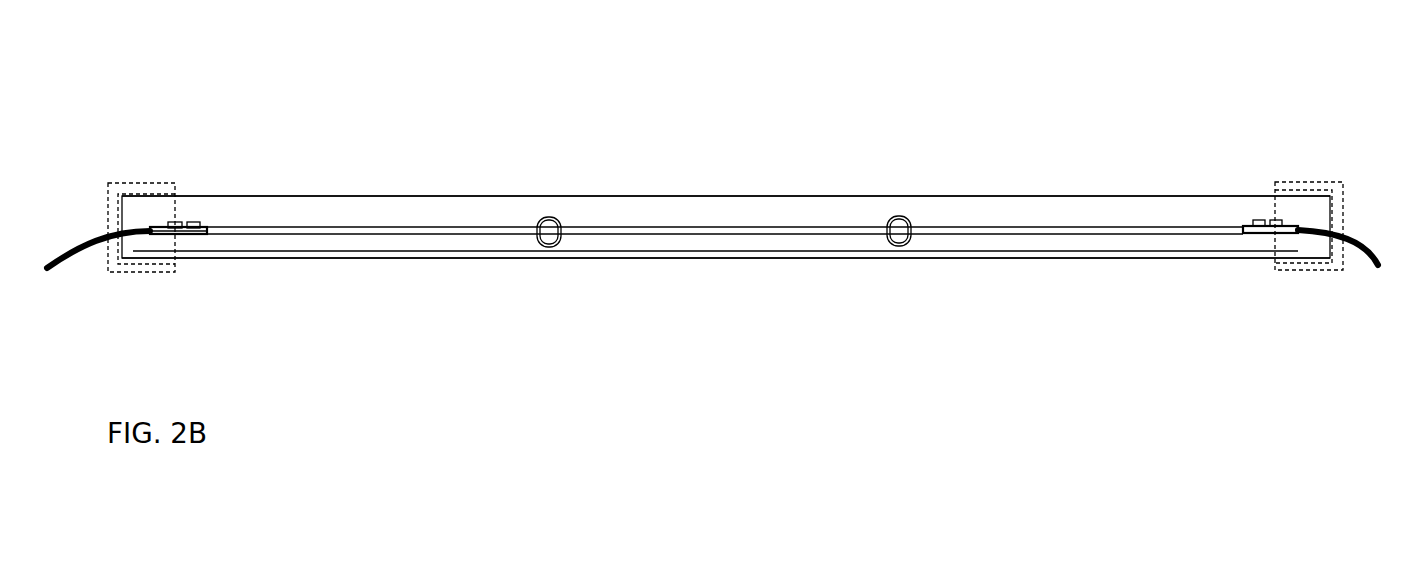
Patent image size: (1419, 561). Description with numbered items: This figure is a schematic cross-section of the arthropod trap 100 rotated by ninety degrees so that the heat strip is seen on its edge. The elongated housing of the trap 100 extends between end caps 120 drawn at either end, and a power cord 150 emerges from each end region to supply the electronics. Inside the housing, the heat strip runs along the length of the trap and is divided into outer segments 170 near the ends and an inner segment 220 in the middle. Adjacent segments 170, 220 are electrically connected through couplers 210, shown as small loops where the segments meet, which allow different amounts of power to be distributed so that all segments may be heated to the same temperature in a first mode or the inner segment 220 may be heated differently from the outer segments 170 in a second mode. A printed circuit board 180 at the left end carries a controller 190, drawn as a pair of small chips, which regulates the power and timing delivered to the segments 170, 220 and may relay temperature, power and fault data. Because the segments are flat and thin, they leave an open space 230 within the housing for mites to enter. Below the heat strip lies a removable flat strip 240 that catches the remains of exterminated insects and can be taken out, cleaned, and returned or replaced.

The arthropod trap 100 is at (1071, 30).
The end cap 120 is at (145, 180).
The power cord 150 is at (68, 248).
The outer segments 170 is at (303, 237).
The printed circuit board 180 is at (183, 237).
The controller 190 is at (192, 223).
The couplers 210 is at (542, 217).
The inner segment 220 is at (653, 235).
The open space 230 is at (382, 215).
The removable flat strip 240 is at (448, 252).